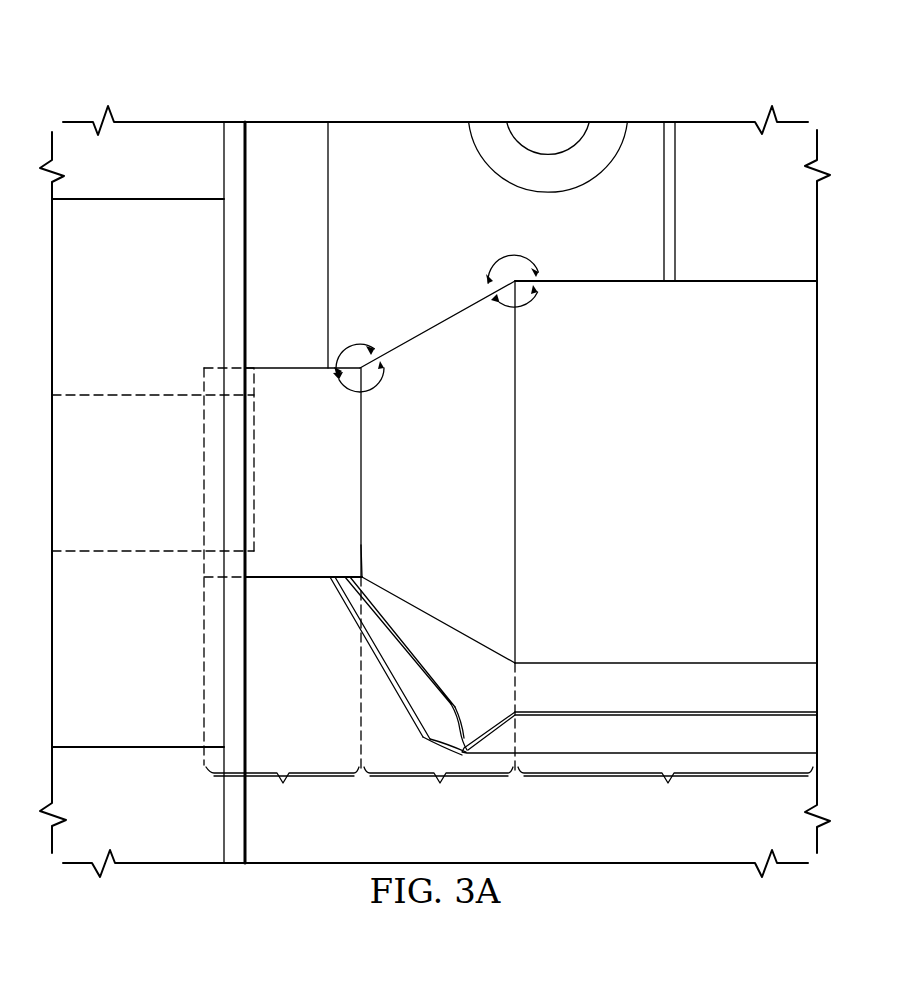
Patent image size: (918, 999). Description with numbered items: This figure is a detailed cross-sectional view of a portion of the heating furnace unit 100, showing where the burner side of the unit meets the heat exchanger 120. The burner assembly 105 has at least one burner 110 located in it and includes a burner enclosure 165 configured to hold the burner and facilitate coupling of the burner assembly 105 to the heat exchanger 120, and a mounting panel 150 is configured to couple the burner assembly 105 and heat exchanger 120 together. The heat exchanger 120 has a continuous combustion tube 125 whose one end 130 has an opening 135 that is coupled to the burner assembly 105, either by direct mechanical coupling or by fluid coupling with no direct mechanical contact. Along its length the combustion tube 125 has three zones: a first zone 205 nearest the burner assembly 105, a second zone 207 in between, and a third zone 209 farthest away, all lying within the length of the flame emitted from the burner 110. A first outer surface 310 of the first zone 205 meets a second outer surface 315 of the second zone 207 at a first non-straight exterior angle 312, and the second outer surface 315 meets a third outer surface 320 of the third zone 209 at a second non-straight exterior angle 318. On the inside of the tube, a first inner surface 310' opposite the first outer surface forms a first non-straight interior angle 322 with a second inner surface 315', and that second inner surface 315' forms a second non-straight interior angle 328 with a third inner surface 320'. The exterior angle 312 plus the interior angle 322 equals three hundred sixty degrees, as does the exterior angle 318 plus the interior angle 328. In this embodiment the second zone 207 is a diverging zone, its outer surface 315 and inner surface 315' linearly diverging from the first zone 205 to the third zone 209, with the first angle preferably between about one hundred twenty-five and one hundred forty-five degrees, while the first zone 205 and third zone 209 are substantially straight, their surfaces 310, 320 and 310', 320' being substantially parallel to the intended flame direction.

The heating furnace unit 100 is at (183, 60).
The burner assembly 105 is at (147, 768).
The burner 110 is at (108, 553).
The heat exchanger 120 is at (729, 215).
The continuous combustion tube 125 is at (606, 279).
The end of the combustion tube 130 is at (192, 586).
The opening 135 is at (190, 452).
The mounting panel 150 is at (215, 268).
The burner enclosure 165 is at (134, 197).
The first zone 205 is at (283, 693).
The second zone 207 is at (439, 736).
The third zone 209 is at (665, 788).
The first outer surface 310 is at (303, 606).
The first inner surface 310' is at (333, 548).
The first non-straight angle 312 is at (355, 344).
The second outer surface 315 is at (390, 666).
The second inner surface 315' is at (438, 608).
The second non-straight angle 318 is at (504, 258).
The third outer surface 320 is at (637, 710).
The third inner surface 320' is at (666, 637).
The first non-straight interior angle 322 is at (378, 380).
The second non-straight interior angle 328 is at (528, 294).